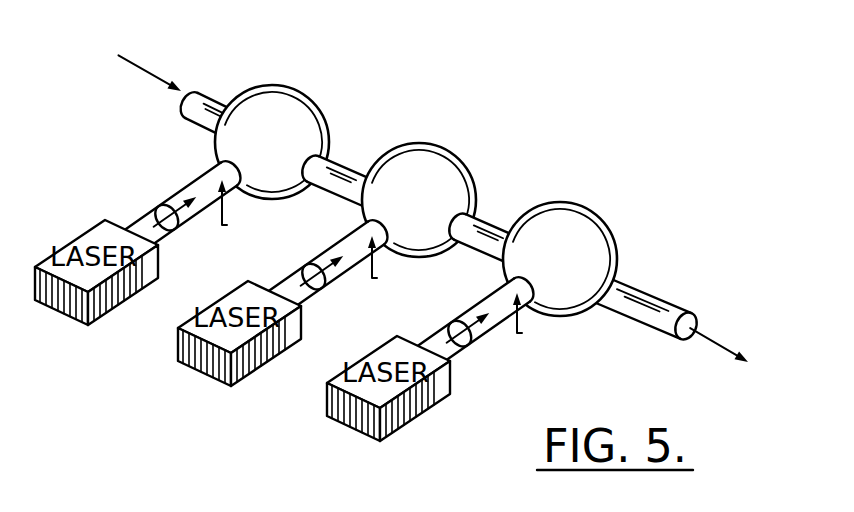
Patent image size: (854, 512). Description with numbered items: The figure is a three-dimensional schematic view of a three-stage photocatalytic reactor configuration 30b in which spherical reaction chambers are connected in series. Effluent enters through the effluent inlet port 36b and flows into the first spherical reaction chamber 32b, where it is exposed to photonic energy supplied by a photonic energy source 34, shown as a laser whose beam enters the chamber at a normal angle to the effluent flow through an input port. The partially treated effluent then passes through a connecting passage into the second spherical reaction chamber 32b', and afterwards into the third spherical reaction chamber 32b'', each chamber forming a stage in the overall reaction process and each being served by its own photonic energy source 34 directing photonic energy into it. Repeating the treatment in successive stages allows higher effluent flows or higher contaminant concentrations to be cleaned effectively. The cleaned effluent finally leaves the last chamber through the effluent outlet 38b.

The photocatalytic reactor configuration 30b is at (430, 236).
The spherical reaction chamber 32b is at (306, 142).
The spherical reaction chamber 32b' is at (453, 196).
The spherical reaction chamber 32b'' is at (599, 256).
The photonic energy source 34 is at (82, 318).
The effluent inlet port 36b is at (205, 103).
The effluent outlet 38b is at (643, 295).